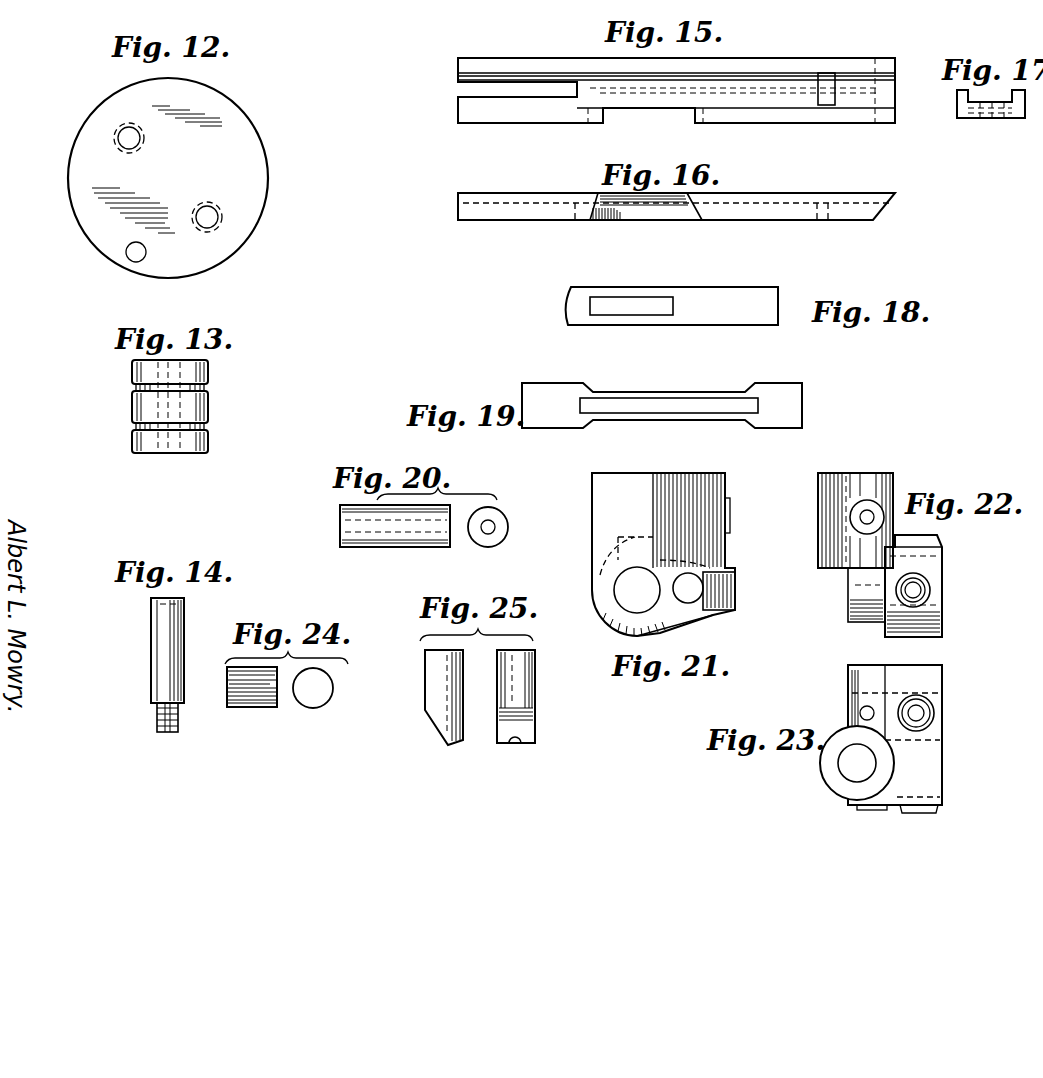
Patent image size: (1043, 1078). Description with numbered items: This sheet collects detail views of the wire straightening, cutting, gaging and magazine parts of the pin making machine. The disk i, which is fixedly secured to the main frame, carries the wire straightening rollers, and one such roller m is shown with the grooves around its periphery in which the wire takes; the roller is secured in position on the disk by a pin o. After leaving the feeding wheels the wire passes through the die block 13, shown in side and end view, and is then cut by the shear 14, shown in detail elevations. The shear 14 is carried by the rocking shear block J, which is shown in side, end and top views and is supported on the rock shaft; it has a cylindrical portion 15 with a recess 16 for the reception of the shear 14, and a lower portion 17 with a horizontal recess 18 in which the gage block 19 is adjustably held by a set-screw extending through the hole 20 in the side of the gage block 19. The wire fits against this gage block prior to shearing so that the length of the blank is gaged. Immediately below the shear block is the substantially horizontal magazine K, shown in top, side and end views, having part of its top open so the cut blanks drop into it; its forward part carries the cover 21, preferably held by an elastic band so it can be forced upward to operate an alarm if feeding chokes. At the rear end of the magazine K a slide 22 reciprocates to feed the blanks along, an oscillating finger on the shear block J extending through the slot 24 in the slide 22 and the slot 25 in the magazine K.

In FIG. 12, the disk i is at (257, 165).
In FIG. 13, the roller m is at (213, 402).
In FIG. 14, the pin o is at (158, 635).
In FIG. 15, the magazine K is at (788, 67).
In FIG. 16, the magazine K is at (660, 212).
In FIG. 17, the magazine K is at (990, 115).
In FIG. 15, the slot 25 is at (487, 100).
In FIG. 16, the slot 25 is at (515, 213).
In FIG. 18, the slot 24 is at (617, 297).
In FIG. 18, the slide 22 is at (712, 297).
In FIG. 19, the cover 21 is at (673, 397).
In FIG. 20, the die block 13 is at (477, 540).
In FIG. 21, the rocking shear block J is at (663, 544).
In FIG. 22, the rocking shear block J is at (857, 580).
In FIG. 23, the rocking shear block J is at (933, 682).
In FIG. 21, the recess 16 is at (672, 485).
In FIG. 22, the recess 16 is at (828, 510).
In FIG. 23, the recess 16 is at (830, 767).
In FIG. 21, the cylindrical portion 15 is at (722, 483).
In FIG. 22, the cylindrical portion 15 is at (840, 480).
In FIG. 23, the cylindrical portion 15 is at (843, 778).
In FIG. 21, the horizontal recess 18 is at (707, 575).
In FIG. 21, the hole 20 is at (737, 590).
In FIG. 22, the hole 20 is at (922, 590).
In FIG. 21, the lower portion 17 is at (697, 615).
In FIG. 22, the lower portion 17 is at (940, 624).
In FIG. 24, the gage block 19 is at (263, 702).
In FIG. 25, the shear 14 is at (443, 707).